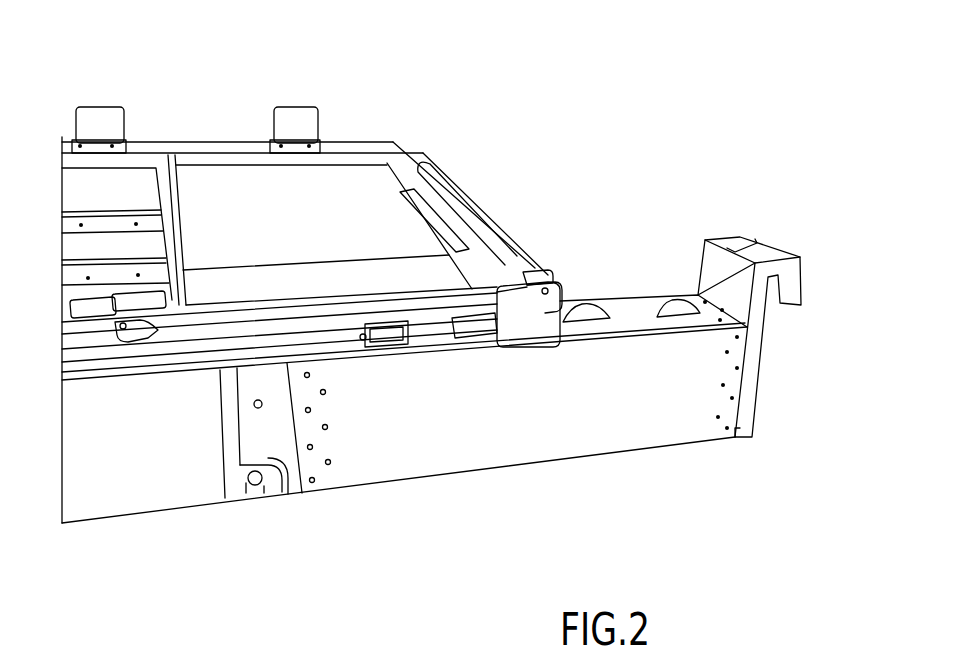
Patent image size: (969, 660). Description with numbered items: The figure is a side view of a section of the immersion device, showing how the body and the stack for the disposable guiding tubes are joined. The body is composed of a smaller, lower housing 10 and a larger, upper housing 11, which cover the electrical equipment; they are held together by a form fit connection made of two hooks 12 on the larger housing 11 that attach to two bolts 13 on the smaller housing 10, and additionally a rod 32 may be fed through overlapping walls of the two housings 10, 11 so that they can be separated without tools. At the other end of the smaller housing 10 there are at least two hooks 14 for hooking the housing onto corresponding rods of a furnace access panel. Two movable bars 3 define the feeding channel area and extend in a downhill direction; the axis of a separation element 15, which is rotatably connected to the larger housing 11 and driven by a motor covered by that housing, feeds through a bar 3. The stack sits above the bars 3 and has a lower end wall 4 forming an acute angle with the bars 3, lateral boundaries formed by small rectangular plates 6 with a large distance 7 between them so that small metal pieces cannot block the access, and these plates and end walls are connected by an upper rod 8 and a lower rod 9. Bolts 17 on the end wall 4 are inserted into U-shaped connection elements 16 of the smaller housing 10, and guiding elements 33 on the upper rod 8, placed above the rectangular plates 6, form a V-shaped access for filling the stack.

The movable bar 3 is at (327, 323).
The lower end wall 4 is at (470, 200).
The rectangular plate 6 is at (125, 223).
The distance 7 is at (257, 214).
The upper rod 8 is at (228, 150).
The lower rod 9 is at (296, 297).
The smaller housing 10 is at (660, 433).
The larger housing 11 is at (128, 488).
The hook 12 is at (275, 487).
The bolt 13 is at (255, 486).
The hook 14 is at (803, 295).
The separation element 15 is at (120, 343).
The U-shaped connection element 16 is at (520, 308).
The bolt 17 is at (548, 288).
The rod 32 is at (255, 407).
The guiding element 33 is at (98, 106).